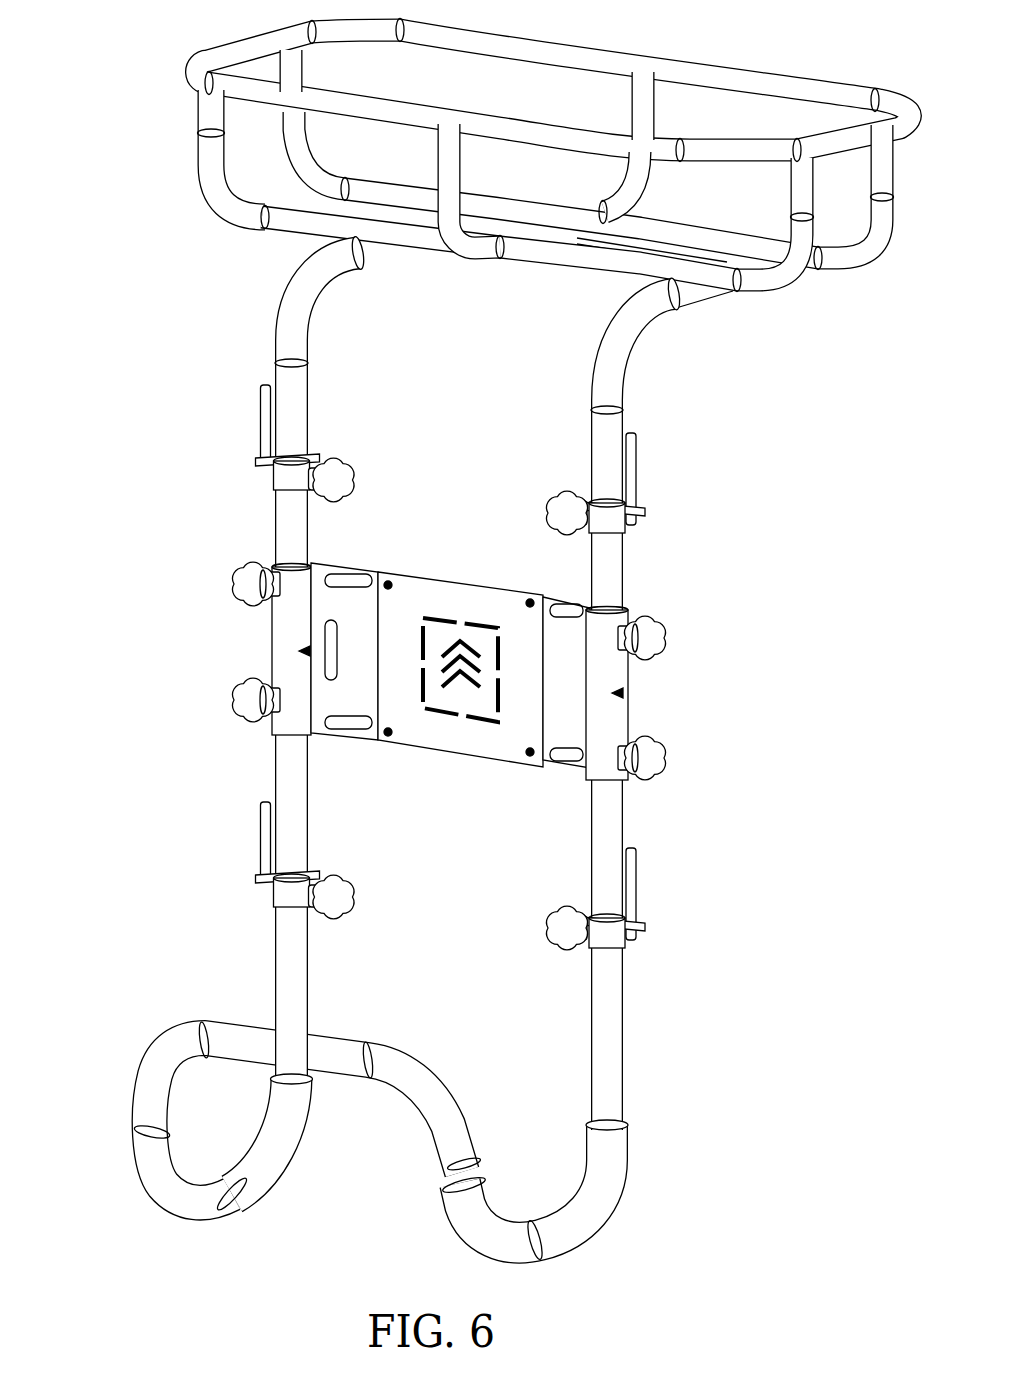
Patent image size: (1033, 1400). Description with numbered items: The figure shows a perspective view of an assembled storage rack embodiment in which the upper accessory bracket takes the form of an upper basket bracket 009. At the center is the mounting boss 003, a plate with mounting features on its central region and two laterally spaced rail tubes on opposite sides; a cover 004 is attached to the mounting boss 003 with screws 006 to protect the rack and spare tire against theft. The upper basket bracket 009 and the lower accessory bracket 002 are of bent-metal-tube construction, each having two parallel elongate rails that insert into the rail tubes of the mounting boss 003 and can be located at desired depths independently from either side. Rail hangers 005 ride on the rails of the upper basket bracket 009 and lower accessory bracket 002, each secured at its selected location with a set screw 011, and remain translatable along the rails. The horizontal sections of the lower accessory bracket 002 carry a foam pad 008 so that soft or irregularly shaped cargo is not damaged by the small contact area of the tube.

The lower accessory bracket 002 is at (183, 1044).
The mounting boss 003 is at (363, 628).
The cover 004 is at (483, 597).
The rail hanger 005 is at (263, 461).
The screw 006 is at (537, 607).
The foam pad 008 is at (588, 1163).
The upper basket bracket 009 is at (217, 72).
The set screw 011 is at (249, 574).